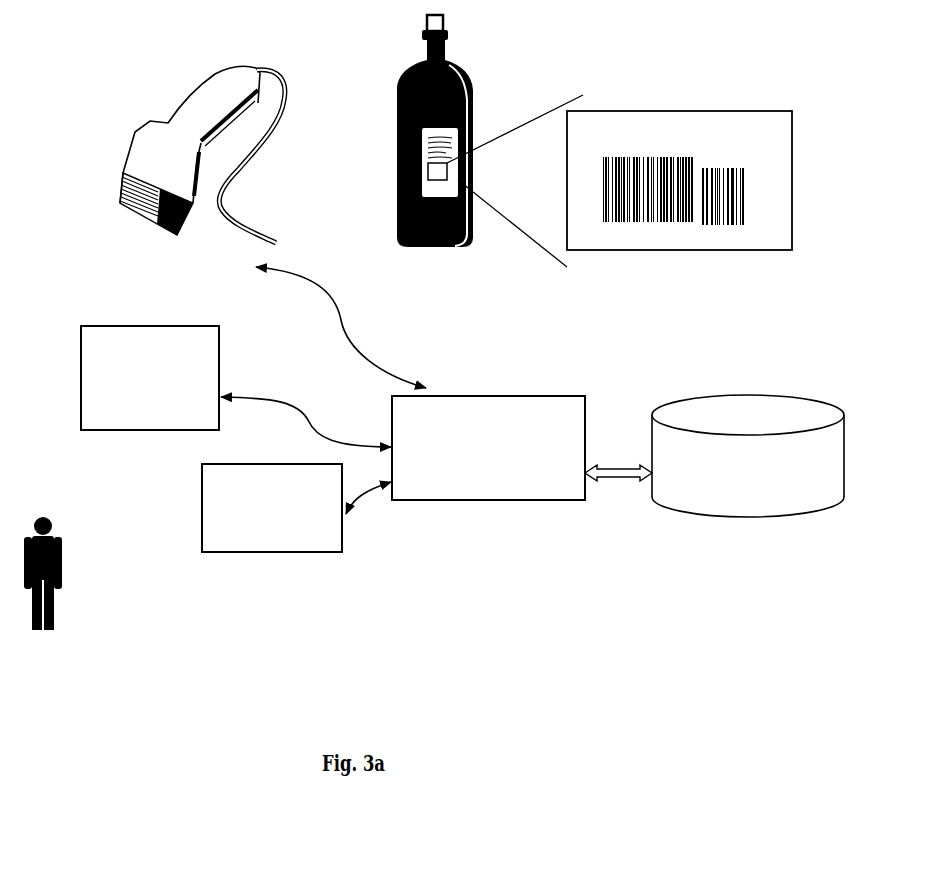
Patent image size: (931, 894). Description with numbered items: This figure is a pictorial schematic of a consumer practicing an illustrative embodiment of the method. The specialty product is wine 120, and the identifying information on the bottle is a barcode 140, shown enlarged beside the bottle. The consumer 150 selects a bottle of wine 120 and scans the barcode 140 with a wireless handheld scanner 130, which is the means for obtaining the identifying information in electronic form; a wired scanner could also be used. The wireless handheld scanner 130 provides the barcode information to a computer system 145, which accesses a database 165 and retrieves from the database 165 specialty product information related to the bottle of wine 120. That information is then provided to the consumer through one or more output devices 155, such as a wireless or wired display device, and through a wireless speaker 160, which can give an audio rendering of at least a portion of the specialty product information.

The wine 120 is at (463, 58).
The wireless handheld scanner 130 is at (188, 78).
The barcode 140 is at (663, 122).
The computer system 145 is at (488, 448).
The consumer 150 is at (82, 603).
The output device 155 is at (150, 378).
The wireless speaker 160 is at (272, 508).
The database 165 is at (723, 413).